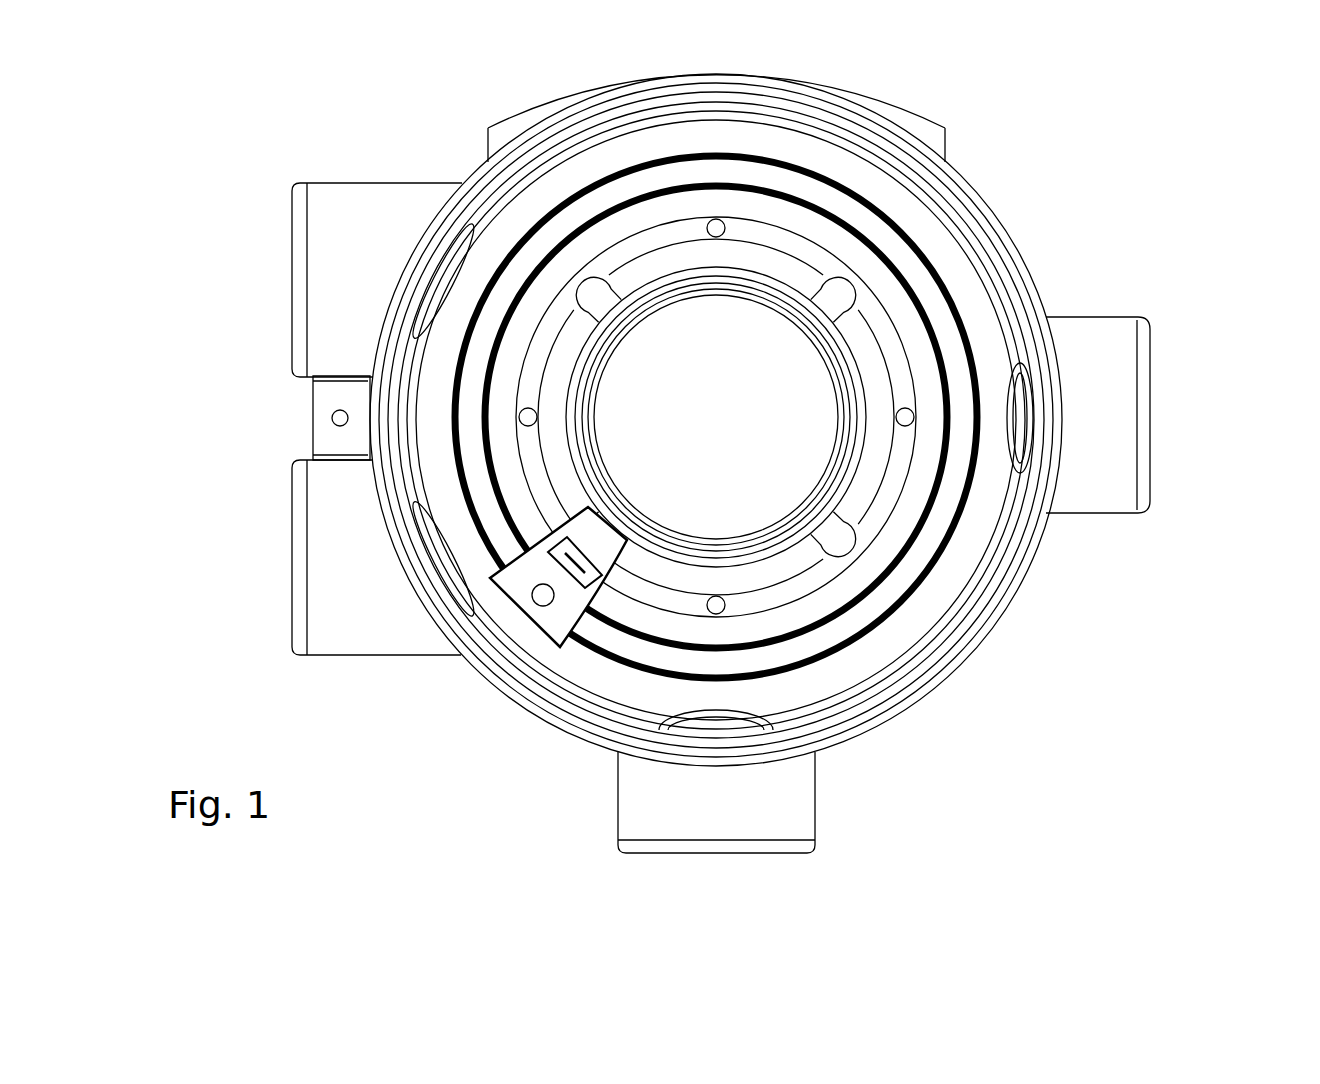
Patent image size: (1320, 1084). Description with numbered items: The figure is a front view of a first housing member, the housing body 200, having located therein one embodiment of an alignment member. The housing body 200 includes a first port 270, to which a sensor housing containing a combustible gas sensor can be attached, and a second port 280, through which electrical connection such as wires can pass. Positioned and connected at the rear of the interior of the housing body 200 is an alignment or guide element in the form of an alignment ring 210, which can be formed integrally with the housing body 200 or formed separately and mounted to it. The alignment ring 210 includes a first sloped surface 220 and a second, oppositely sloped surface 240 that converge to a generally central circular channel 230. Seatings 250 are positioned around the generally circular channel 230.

The housing body 200 is at (1003, 187).
The alignment ring 210 is at (935, 322).
The first sloped surface 220 is at (922, 497).
The generally central circular channel 230 is at (805, 578).
The second sloped surface 240 is at (663, 577).
The seatings 250 is at (703, 221).
The first port 270 is at (830, 850).
The second port 280 is at (1163, 468).